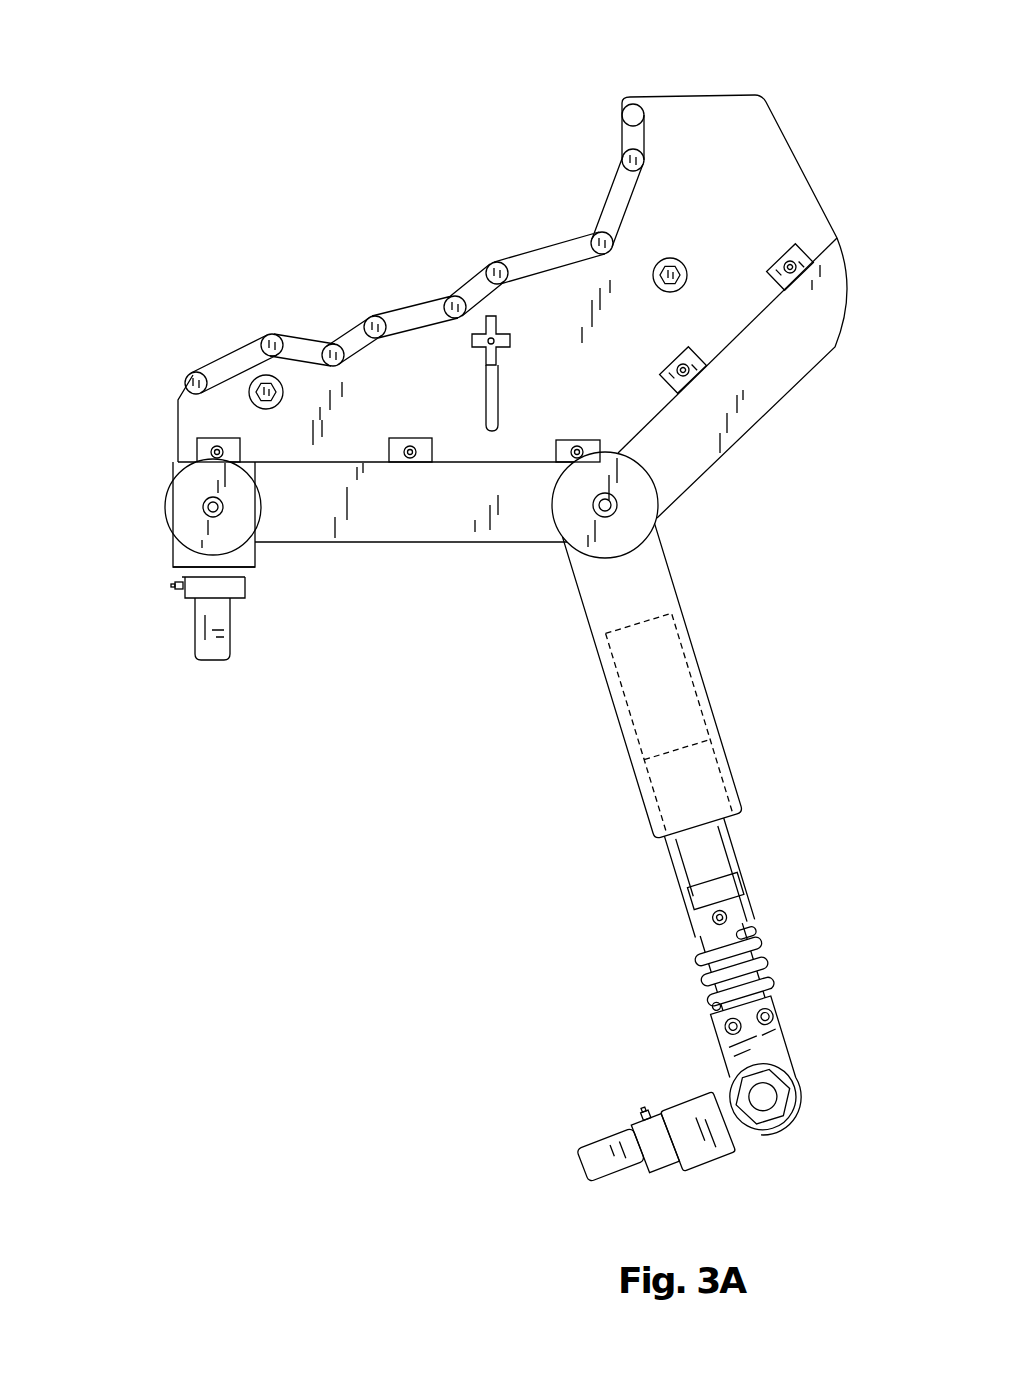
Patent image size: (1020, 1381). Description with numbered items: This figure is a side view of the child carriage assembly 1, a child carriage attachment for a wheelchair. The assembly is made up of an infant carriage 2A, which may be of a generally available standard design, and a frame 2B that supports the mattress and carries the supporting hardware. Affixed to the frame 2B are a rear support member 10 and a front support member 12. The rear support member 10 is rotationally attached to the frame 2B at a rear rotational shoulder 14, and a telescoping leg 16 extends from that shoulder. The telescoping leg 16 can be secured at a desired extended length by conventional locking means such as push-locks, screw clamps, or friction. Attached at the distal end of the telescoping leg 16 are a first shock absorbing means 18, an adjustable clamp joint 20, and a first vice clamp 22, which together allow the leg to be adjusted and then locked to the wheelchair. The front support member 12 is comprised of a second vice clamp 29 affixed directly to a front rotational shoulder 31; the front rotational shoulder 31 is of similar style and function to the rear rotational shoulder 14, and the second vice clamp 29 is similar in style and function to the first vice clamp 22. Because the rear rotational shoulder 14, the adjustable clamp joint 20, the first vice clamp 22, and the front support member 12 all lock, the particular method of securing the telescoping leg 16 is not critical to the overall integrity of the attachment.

The child carriage assembly 1 is at (280, 70).
The infant carriage 2A is at (782, 162).
The frame 2B is at (743, 417).
The rear support member 10 is at (472, 649).
The front support member 12 is at (155, 673).
The rear rotational shoulder 14 is at (565, 547).
The telescoping leg 16 is at (762, 704).
The first shock absorbing means 18 is at (686, 978).
The adjustable clamp joint 20 is at (797, 1107).
The first vice clamp 22 is at (615, 1147).
The second vice clamp 29 is at (227, 650).
The front rotational shoulder 31 is at (252, 517).